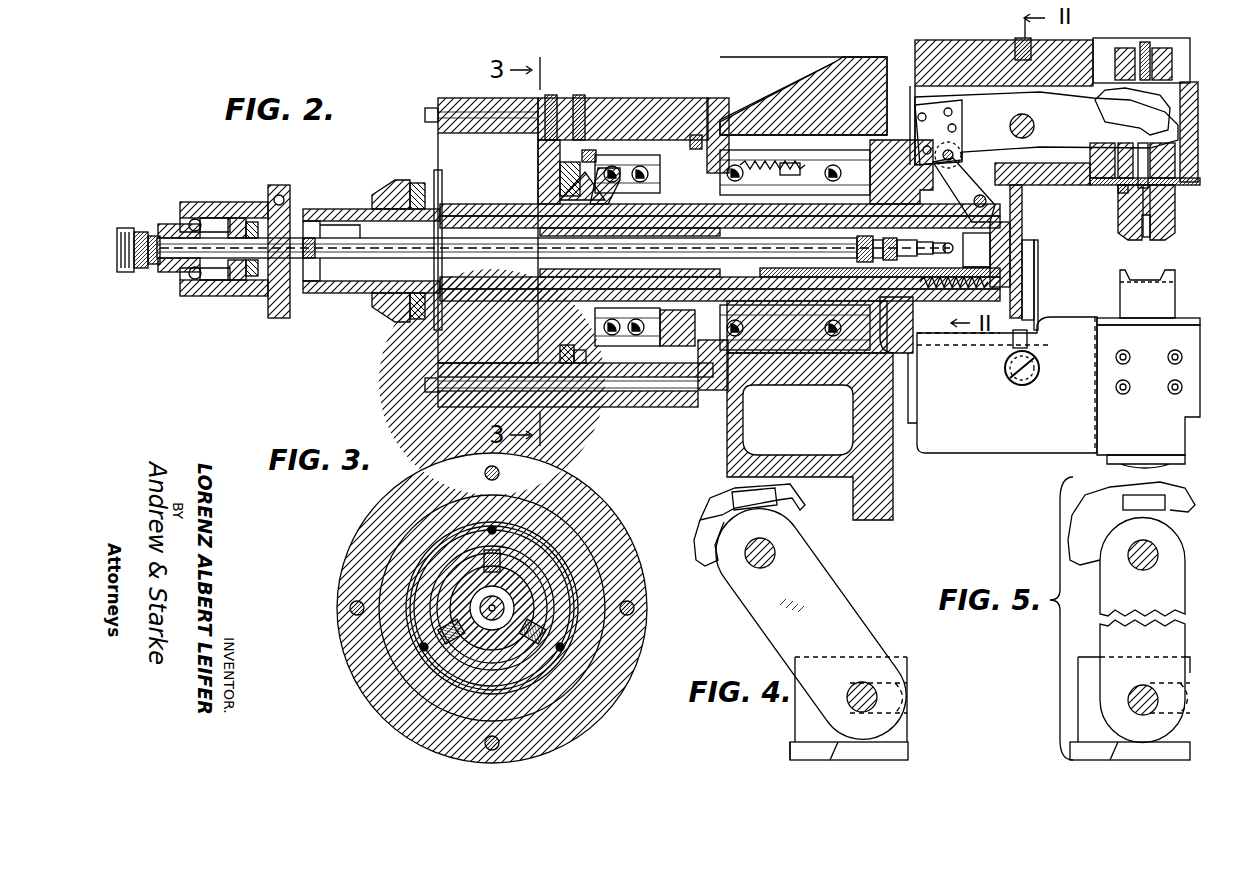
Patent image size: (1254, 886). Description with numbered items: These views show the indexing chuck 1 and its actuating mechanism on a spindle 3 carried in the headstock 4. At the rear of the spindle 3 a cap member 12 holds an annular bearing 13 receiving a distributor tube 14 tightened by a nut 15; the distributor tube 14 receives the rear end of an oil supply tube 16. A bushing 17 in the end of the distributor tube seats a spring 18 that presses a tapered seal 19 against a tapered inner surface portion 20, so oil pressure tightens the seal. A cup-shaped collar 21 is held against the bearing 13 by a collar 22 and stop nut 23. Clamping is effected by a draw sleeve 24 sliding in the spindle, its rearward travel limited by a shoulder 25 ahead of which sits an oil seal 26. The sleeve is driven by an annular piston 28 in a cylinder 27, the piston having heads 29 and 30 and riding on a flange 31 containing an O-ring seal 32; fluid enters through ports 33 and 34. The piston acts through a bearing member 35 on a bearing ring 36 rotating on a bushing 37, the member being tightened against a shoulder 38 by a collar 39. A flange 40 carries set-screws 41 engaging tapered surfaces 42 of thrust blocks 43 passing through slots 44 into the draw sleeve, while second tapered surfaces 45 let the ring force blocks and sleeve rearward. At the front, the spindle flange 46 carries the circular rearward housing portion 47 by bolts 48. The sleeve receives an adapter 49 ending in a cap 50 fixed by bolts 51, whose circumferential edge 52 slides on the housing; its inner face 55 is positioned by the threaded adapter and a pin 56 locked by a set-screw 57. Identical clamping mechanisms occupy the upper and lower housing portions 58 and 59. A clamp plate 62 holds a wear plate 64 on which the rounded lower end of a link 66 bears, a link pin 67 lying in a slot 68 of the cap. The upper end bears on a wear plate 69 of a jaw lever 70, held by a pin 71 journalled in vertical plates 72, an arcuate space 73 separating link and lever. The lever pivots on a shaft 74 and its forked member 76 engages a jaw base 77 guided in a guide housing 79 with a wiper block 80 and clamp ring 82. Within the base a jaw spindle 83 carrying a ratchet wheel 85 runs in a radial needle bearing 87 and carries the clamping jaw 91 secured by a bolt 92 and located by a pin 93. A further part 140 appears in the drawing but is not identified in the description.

In FIG. 2, the indexing chuck 1 is at (1207, 248).
In FIG. 2, the spindle 3 is at (342, 293).
In FIG. 3, the spindle 3 is at (530, 655).
In FIG. 2, the headstock 4 is at (858, 57).
In FIG. 2, the cap member 12 is at (282, 318).
In FIG. 2, the annular bearing 13 is at (200, 215).
In FIG. 2, the distributor tube 14 is at (152, 264).
In FIG. 2, the nut 15 is at (200, 290).
In FIG. 2, the oil supply tube 16 is at (350, 258).
In FIG. 3, the oil supply tube 16 is at (480, 600).
In FIG. 2, the bushing 17 is at (128, 228).
In FIG. 2, the spring 18 is at (141, 232).
In FIG. 2, the tapered annular seal 19 is at (172, 224).
In FIG. 2, the tapered inner surface portion 20 is at (170, 272).
In FIG. 2, the cup-shaped collar 21 is at (240, 280).
In FIG. 2, the collar 22 is at (240, 215).
In FIG. 2, the stop nut 23 is at (262, 236).
In FIG. 2, the draw sleeve 24 is at (520, 301).
In FIG. 3, the draw sleeve 24 is at (540, 612).
In FIG. 2, the annular shoulder 25 is at (326, 232).
In FIG. 2, the annular oil seal 26 is at (420, 228).
In FIG. 2, the cylinder 27 is at (470, 98).
In FIG. 3, the cylinder 27 is at (352, 545).
In FIG. 2, the annular piston 28 is at (612, 98).
In FIG. 2, the annular head 29 is at (538, 146).
In FIG. 2, the annular head 30 is at (686, 135).
In FIG. 2, the annular flange 31 is at (566, 365).
In FIG. 2, the O-ring seal 32 is at (582, 360).
In FIG. 2, the port 33 is at (551, 95).
In FIG. 2, the port 34 is at (579, 95).
In FIG. 2, the annular bearing member 35 is at (652, 348).
In FIG. 2, the annular bearing ring 36 is at (578, 289).
In FIG. 2, the bushing 37 is at (640, 290).
In FIG. 2, the shoulder 38 is at (600, 340).
In FIG. 2, the collar 39 is at (698, 289).
In FIG. 2, the annular flange 40 is at (540, 303).
In FIG. 2, the set-screws 41 is at (560, 170).
In FIG. 3, the set-screws 41 is at (504, 526).
In FIG. 2, the tapered upper surface 42 is at (570, 195).
In FIG. 2, the thrust block 43 is at (562, 217).
In FIG. 3, the thrust block 43 is at (505, 558).
In FIG. 2, the longitudinal slot 44 is at (466, 204).
In FIG. 2, the second tapered surface 45 is at (582, 165).
In FIG. 2, the flange 46 is at (913, 345).
In FIG. 2, the central circular rearward portion 47 is at (1038, 300).
In FIG. 2, the bolts 48 is at (1004, 345).
In FIG. 2, the annular adapter 49 is at (1024, 232).
In FIG. 4, the annular adapter 49 is at (797, 730).
In FIG. 5, the annular adapter 49 is at (1094, 657).
In FIG. 2, the cap 50 is at (1036, 266).
In FIG. 2, the bolts 51 is at (985, 300).
In FIG. 2, the circumferential edge 52 is at (1028, 185).
In FIG. 2, the inner face 55 is at (990, 228).
In FIG. 2, the pin 56 is at (915, 320).
In FIG. 2, the set-screw 57 is at (992, 250).
In FIG. 2, the upper rectangular housing portion 58 is at (962, 40).
In FIG. 2, the lower rectangular housing portion 59 is at (988, 455).
In FIG. 4, the clamp plate 62 is at (790, 750).
In FIG. 5, the clamp plate 62 is at (1098, 748).
In FIG. 4, the wear plate 64 is at (908, 750).
In FIG. 5, the wear plate 64 is at (1190, 750).
In FIG. 2, the link member 66 is at (975, 182).
In FIG. 4, the link member 66 is at (811, 624).
In FIG. 5, the link member 66 is at (1142, 630).
In FIG. 4, the link pin 67 is at (852, 688).
In FIG. 4, the longitudinal slot 68 is at (908, 690).
In FIG. 5, the longitudinal slot 68 is at (1188, 690).
In FIG. 4, the wear plate 69 is at (740, 487).
In FIG. 5, the wear plate 69 is at (1152, 496).
In FIG. 2, the jaw lever 70 is at (970, 118).
In FIG. 4, the jaw lever 70 is at (798, 506).
In FIG. 5, the jaw lever 70 is at (1190, 508).
In FIG. 4, the horizontal pin 71 is at (775, 560).
In FIG. 5, the horizontal pin 71 is at (1152, 565).
In FIG. 2, the vertical plates 72 is at (956, 153).
In FIG. 4, the arcuate space 73 is at (700, 522).
In FIG. 5, the arcuate space 73 is at (1106, 520).
In FIG. 2, the pivot shaft 74 is at (1032, 122).
In FIG. 2, the forked member 76 is at (1147, 122).
In FIG. 2, the jaw base 77 is at (1185, 135).
In FIG. 2, the guide housing 79 is at (1198, 110).
In FIG. 2, the wiper block 80 is at (1104, 160).
In FIG. 2, the rectangular clamp ring 82 is at (1200, 176).
In FIG. 2, the jaw spindle 83 is at (1174, 66).
In FIG. 2, the ratchet wheel 85 is at (1120, 42).
In FIG. 2, the radial needle bearing 87 is at (1172, 160).
In FIG. 2, the workpiece clamping jaw 91 is at (1178, 212).
In FIG. 2, the bolt 92 is at (1146, 236).
In FIG. 2, the pin 93 is at (1120, 188).
In FIG. 2, the spring 140 is at (828, 203).